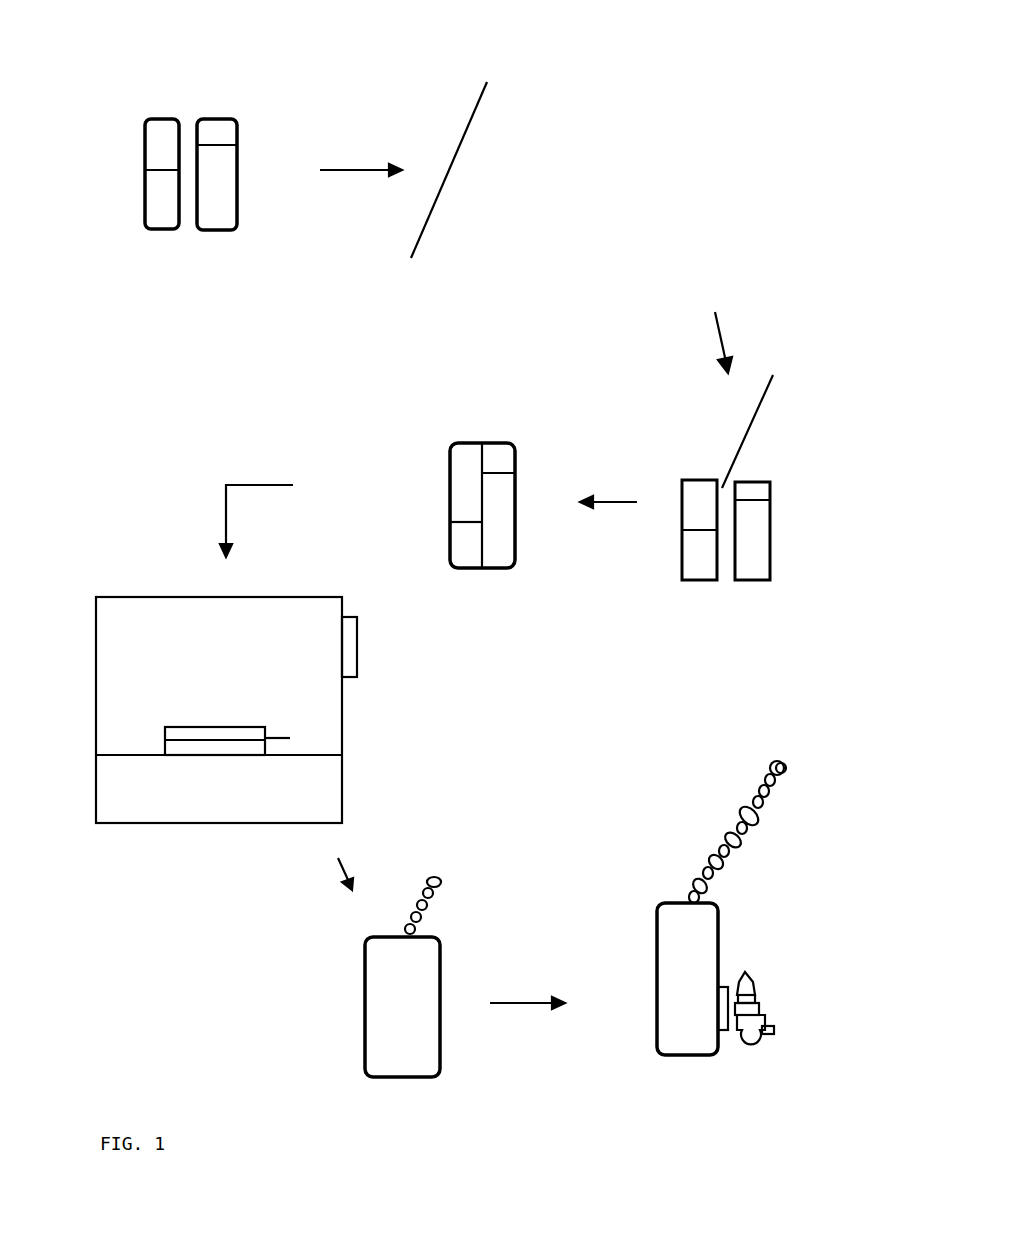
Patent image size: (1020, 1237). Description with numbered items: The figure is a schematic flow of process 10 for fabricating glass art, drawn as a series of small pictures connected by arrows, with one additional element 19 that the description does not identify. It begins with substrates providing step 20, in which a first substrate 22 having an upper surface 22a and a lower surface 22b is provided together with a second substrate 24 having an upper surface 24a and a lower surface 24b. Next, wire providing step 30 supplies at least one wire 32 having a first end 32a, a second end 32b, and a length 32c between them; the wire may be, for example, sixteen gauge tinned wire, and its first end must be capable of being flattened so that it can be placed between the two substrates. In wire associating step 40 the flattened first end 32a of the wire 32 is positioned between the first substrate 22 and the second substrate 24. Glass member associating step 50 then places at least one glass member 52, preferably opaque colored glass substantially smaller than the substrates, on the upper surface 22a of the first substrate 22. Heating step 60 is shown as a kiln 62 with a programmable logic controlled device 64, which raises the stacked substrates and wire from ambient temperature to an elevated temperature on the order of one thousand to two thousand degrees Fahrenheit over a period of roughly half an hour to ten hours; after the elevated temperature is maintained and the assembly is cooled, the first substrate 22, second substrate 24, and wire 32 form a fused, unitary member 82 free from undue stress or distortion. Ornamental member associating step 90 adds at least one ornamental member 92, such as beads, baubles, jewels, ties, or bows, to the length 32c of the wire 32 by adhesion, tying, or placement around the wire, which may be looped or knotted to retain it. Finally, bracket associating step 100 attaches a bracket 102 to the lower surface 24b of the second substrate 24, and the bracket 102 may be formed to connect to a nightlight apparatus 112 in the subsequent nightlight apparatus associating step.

The process for fabricating glass art 10 is at (798, 164).
The connector 19 is at (440, 882).
The substrates providing step 20 is at (187, 236).
The first substrate 22 is at (158, 230).
The upper surface of first substrate 22a is at (145, 135).
The lower surface of first substrate 22b is at (145, 170).
The second substrate 24 is at (217, 230).
The upper surface of second substrate 24a is at (237, 145).
The lower surface of second substrate 24b is at (237, 177).
The wire providing step 30 is at (515, 218).
The wire 32 is at (524, 168).
The first end of wire 32a is at (419, 241).
The second end of wire 32b is at (470, 122).
The length of wire 32c is at (497, 218).
The wire associating step 40 is at (802, 448).
The glass member associating step 50 is at (480, 508).
The glass member 52 is at (450, 458).
The heating step 60 is at (266, 757).
The kiln 62 is at (296, 823).
The programmable logic controlled device 64 is at (357, 645).
The fused unitary member 82 is at (422, 1077).
The ornamental member associating step 90 is at (396, 1028).
The ornamental member 92 is at (730, 845).
The bracket associating step 100 is at (730, 971).
The bracket 102 is at (722, 1035).
The nightlight apparatus 112 is at (772, 1040).